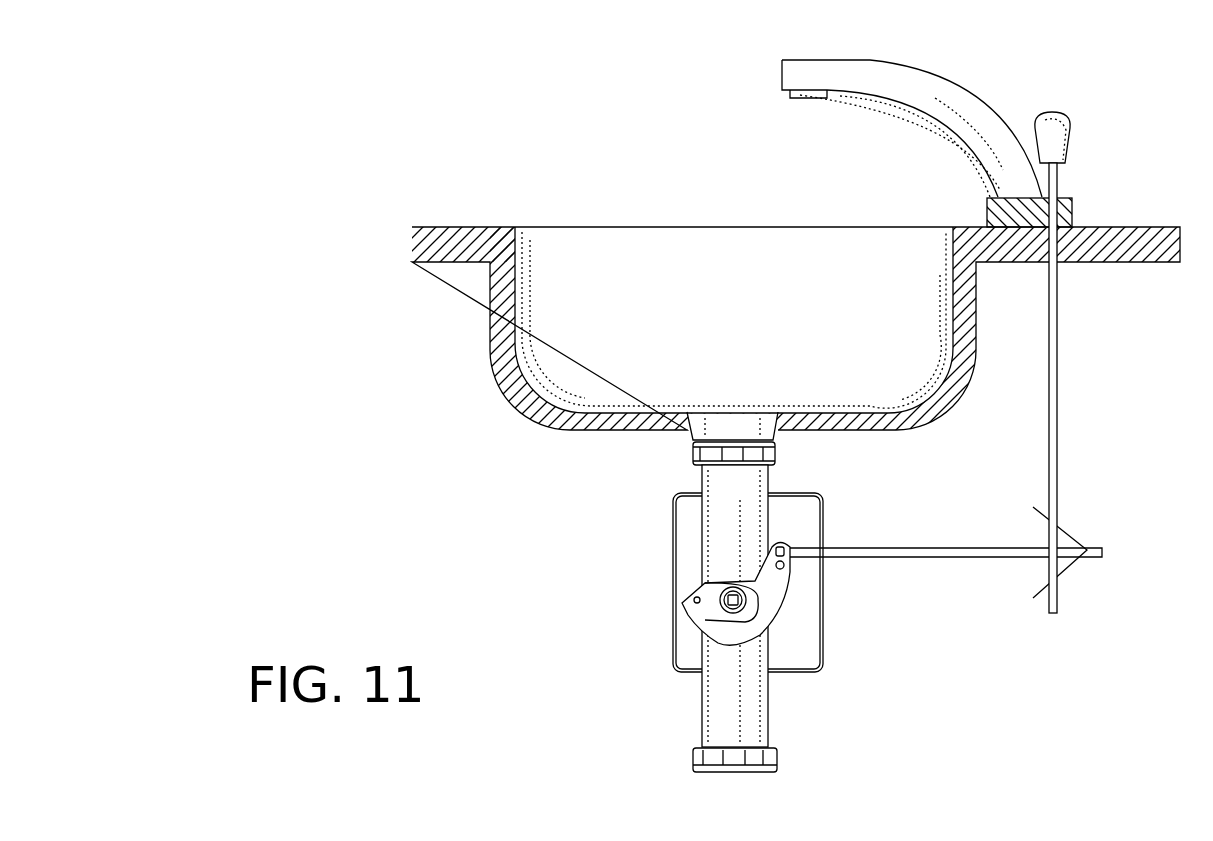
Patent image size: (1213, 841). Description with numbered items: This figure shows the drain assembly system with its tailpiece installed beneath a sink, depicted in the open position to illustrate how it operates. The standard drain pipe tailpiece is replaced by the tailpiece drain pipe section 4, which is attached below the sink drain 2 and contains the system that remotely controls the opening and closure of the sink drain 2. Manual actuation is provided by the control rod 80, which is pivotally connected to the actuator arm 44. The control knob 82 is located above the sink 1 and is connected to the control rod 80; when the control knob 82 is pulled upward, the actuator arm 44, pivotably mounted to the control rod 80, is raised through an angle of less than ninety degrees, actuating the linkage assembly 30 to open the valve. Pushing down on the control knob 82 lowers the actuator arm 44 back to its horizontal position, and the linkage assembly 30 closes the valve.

The sink 1 is at (735, 302).
The sink drain 2 is at (735, 428).
The tailpiece drain pipe section 4 is at (730, 480).
The linkage assembly 30 is at (770, 625).
The actuator arm 44 is at (997, 556).
The control rod 80 is at (1055, 383).
The control knob 82 is at (1058, 125).